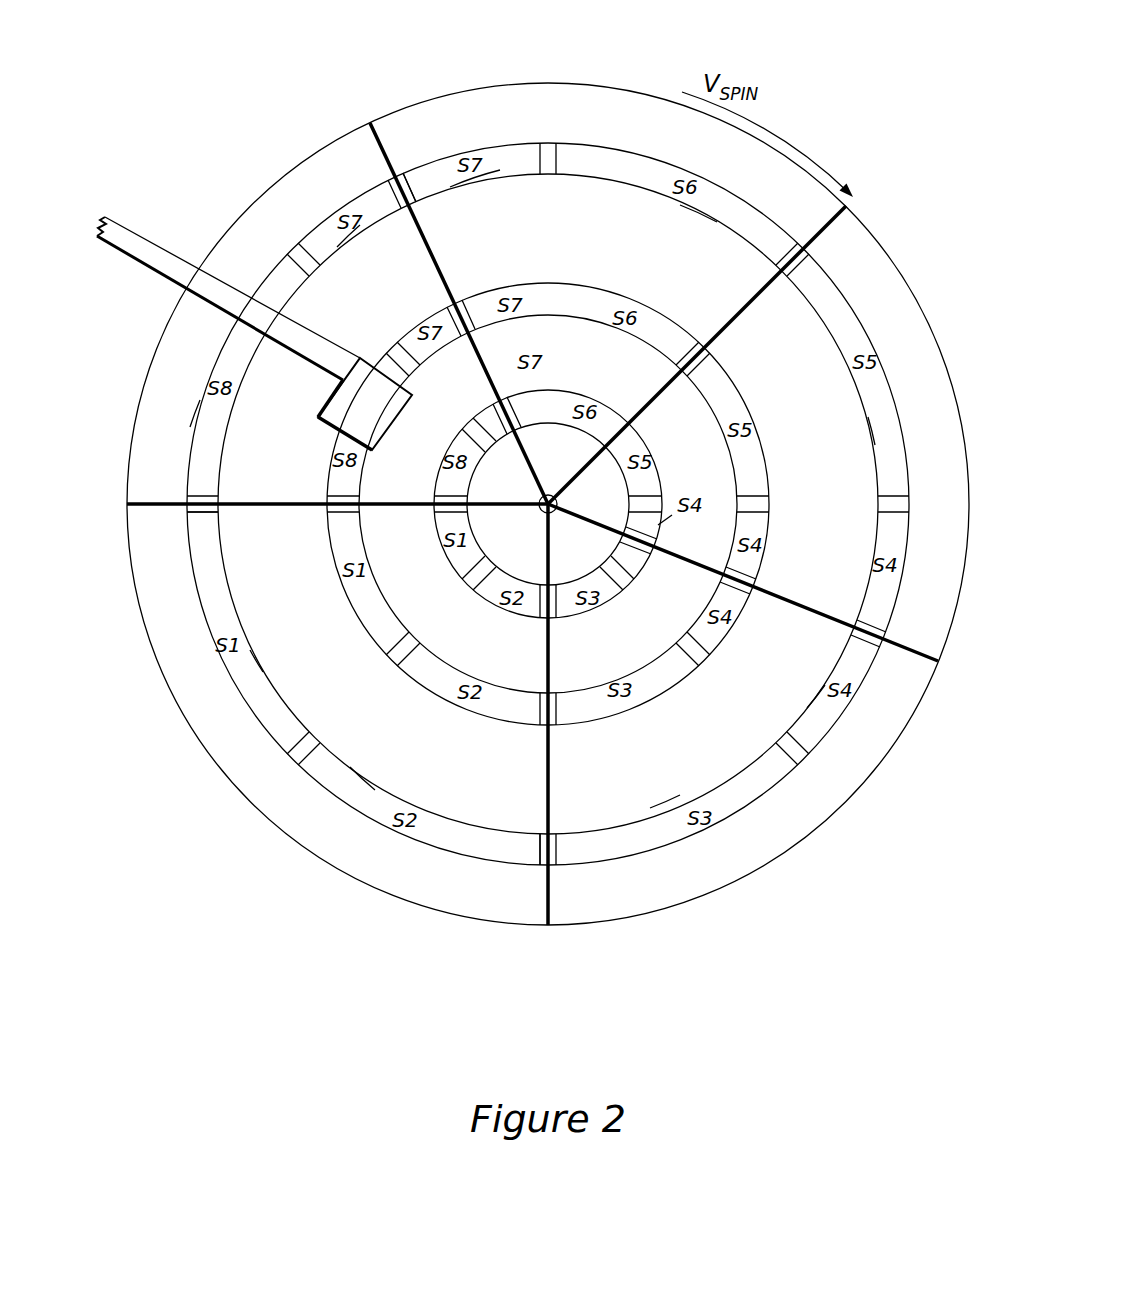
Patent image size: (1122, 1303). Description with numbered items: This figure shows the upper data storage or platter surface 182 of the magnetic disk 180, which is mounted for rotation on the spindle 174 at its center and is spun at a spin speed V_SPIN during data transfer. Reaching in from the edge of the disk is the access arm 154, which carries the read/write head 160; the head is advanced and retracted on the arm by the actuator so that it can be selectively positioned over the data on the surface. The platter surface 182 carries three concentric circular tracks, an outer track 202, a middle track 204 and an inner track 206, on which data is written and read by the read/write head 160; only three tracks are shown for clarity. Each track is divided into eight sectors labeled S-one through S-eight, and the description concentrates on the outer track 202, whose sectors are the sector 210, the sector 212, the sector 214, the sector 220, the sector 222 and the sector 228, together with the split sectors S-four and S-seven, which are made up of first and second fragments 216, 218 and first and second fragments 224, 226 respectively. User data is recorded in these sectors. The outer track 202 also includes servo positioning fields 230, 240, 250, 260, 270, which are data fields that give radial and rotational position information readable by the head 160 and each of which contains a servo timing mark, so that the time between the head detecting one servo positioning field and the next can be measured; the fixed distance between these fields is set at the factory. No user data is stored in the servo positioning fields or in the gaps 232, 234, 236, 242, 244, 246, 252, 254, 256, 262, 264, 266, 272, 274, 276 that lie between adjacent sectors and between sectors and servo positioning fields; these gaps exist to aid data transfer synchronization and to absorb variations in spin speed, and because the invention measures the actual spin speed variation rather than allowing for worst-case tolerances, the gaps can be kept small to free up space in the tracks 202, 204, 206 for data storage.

The access arm 154 is at (163, 253).
The read/write head 160 is at (322, 415).
The spindle 174 is at (540, 510).
The disk 180 is at (738, 893).
The upper data storage or platter surface 182 is at (208, 698).
The outer track 202 is at (832, 732).
The track 204 is at (328, 524).
The track 206 is at (430, 525).
The sector 210 is at (263, 672).
The sector 212 is at (350, 767).
The sector 214 is at (650, 808).
The first fragment of split sector S4 216 is at (807, 708).
The second fragment of split sector S4 218 is at (910, 537).
The sector 220 is at (868, 417).
The sector 222 is at (717, 222).
The first fragment of split sector S7 224 is at (450, 187).
The second fragment of split sector S7 226 is at (337, 247).
The sector 228 is at (190, 427).
The servo positioning field 230 is at (167, 506).
The gap 232 is at (197, 513).
The gap 234 is at (308, 760).
The gap 236 is at (538, 848).
The servo positioning field 240 is at (548, 900).
The gap 242 is at (557, 848).
The gap 244 is at (790, 765).
The gap 246 is at (885, 648).
The servo positioning field 250 is at (890, 655).
The gap 252 is at (893, 617).
The gap 254 is at (895, 493).
The gap 256 is at (803, 260).
The servo positioning field 260 is at (833, 223).
The gap 262 is at (807, 243).
The gap 264 is at (547, 139).
The gap 266 is at (410, 190).
The servo positioning field 270 is at (380, 124).
The gap 272 is at (387, 186).
The gap 274 is at (290, 247).
The gap 276 is at (207, 490).